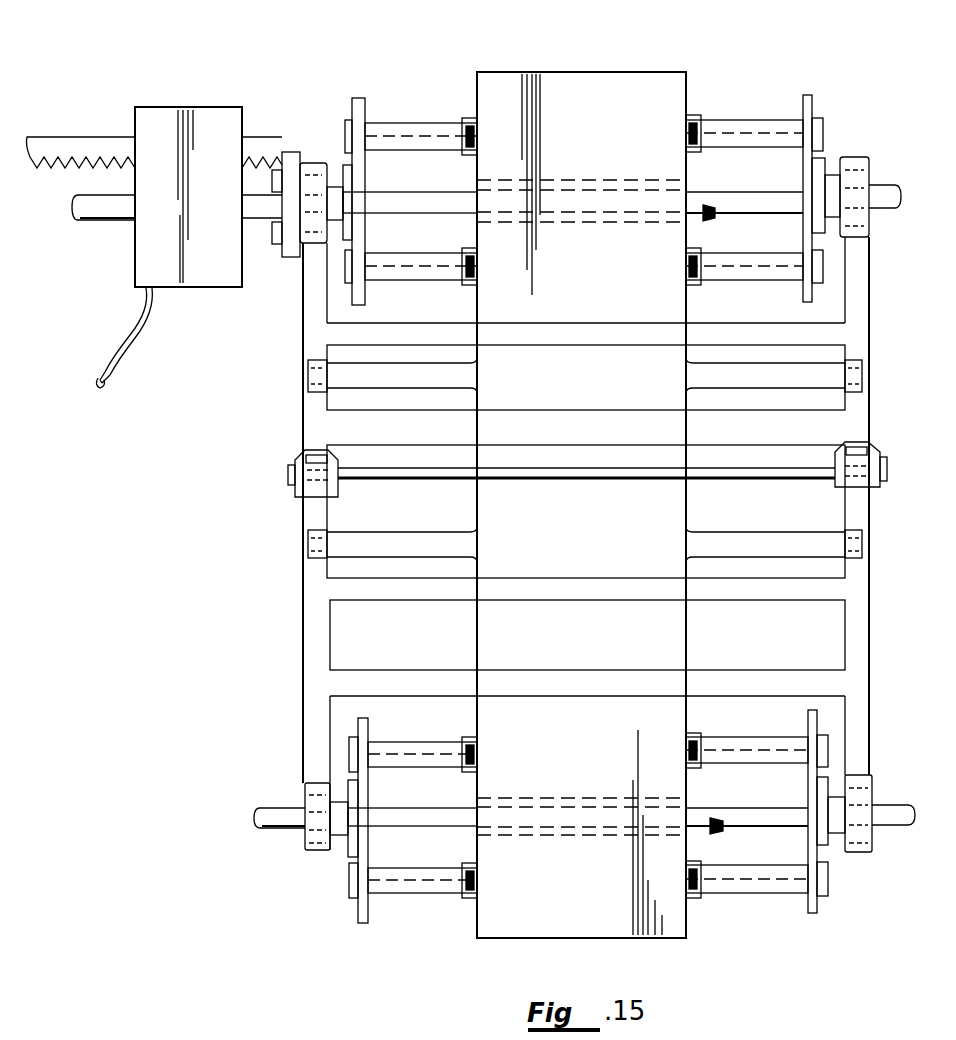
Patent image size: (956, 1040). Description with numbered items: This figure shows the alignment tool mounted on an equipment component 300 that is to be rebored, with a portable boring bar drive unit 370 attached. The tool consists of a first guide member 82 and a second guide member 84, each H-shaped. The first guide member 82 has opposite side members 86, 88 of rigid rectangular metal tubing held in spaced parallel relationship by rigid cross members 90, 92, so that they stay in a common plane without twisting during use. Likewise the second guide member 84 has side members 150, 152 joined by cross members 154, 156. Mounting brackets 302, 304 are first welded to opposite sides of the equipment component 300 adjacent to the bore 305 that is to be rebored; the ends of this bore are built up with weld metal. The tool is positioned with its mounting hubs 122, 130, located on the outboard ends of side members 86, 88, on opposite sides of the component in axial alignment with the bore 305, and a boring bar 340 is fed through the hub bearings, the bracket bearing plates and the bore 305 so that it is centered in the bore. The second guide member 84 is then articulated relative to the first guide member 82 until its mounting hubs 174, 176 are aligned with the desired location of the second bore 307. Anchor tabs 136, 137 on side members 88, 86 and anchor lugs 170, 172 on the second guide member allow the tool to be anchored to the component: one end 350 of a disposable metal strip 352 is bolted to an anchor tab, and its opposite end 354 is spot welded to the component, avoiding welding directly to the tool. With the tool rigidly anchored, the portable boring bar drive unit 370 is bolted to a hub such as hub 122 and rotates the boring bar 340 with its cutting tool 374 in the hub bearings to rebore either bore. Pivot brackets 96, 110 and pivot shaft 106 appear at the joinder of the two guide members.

The first guide member 82 is at (290, 307).
The second guide member 84 is at (283, 735).
The side member 86 is at (303, 347).
The side member 88 is at (858, 283).
The cross member 90 is at (592, 328).
The cross member 92 is at (572, 417).
The shaft mounting bracket 96 is at (296, 453).
The pivot shaft 106 is at (572, 480).
The shaft mounting bracket 110 is at (878, 445).
The mounting hub 122 is at (309, 162).
The mounting hub 130 is at (853, 157).
The anchor tab 136 is at (855, 385).
The anchor tab 137 is at (303, 385).
The side member 150 is at (303, 631).
The side member 152 is at (869, 631).
The cross member 154 is at (588, 672).
The cross member 156 is at (575, 582).
The anchor lug 170 is at (303, 547).
The anchor lug 172 is at (862, 541).
The mounting hub 174 is at (318, 852).
The mounting hub 176 is at (859, 852).
The equipment component 300 is at (592, 71).
The mounting bracket 302 is at (746, 102).
The mounting bracket 304 is at (410, 108).
The bore 305 is at (582, 180).
The second bore 307 is at (587, 798).
The boring bar 340 is at (406, 198).
The end of metal strip 350 is at (830, 370).
The metal strip 352 is at (790, 368).
The opposite end of metal strip 354 is at (700, 375).
The portable boring bar drive unit 370 is at (183, 118).
The cutting tool 374 is at (716, 213).